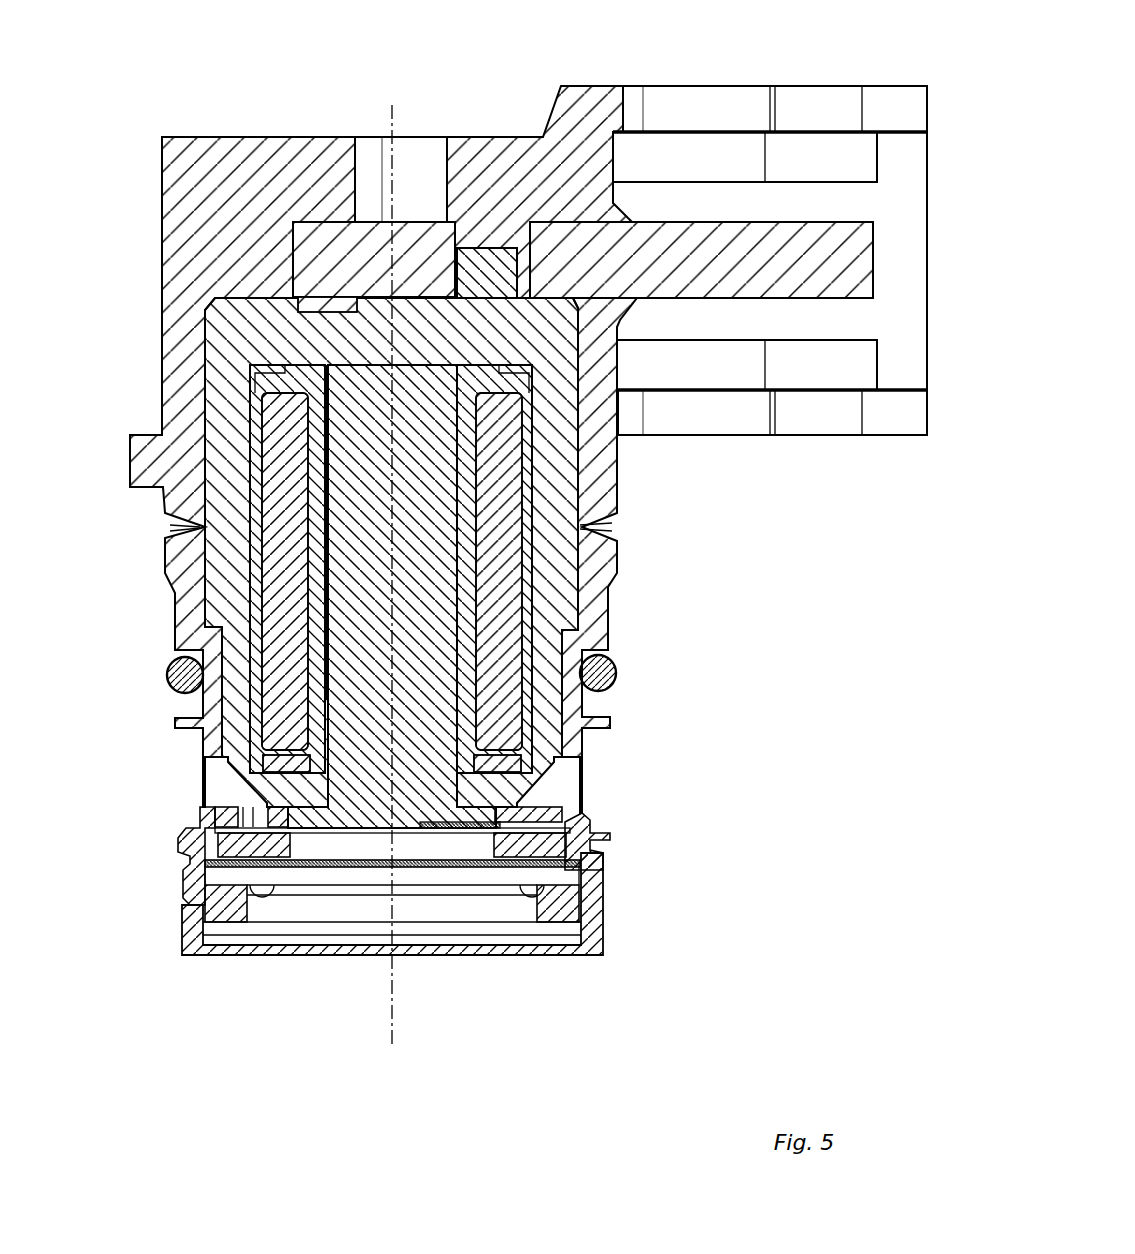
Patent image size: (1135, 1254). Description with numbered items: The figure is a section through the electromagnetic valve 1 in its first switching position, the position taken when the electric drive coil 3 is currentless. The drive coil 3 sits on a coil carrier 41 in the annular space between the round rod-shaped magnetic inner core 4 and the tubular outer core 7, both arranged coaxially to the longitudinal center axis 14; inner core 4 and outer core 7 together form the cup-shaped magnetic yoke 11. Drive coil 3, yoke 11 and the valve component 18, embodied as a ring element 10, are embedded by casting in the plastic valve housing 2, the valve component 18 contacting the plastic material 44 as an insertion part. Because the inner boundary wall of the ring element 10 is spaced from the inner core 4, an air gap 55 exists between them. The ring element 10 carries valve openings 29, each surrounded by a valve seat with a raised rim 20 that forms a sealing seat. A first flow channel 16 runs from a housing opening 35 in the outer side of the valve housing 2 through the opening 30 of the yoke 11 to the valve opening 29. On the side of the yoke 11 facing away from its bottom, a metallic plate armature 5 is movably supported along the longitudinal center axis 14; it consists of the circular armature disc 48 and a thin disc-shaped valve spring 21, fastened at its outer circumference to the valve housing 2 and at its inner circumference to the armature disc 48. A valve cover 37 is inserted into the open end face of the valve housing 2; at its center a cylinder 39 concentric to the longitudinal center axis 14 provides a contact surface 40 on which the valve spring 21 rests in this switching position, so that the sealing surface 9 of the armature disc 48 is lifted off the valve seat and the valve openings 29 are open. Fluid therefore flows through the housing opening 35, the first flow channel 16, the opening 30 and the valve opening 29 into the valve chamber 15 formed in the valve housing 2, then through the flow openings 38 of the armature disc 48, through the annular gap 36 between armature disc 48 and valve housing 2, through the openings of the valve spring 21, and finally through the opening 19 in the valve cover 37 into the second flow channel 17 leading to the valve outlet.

The electromagnetic valve 1 is at (148, 125).
The valve housing 2 is at (213, 258).
The electric drive coil 3 is at (270, 417).
The magnetic inner core 4 is at (430, 528).
The plate armature 5 is at (592, 820).
The outer core 7 is at (548, 640).
The sealing surface 9 is at (573, 843).
The ring element 10 is at (567, 813).
The magnetic yoke 11 is at (220, 466).
The longitudinal center axis 14 is at (393, 105).
The valve chamber 15 is at (213, 830).
The first flow channel 16 is at (220, 797).
The second flow channel 17 is at (298, 912).
The valve component 18 is at (217, 813).
The opening 19 is at (267, 890).
The raised rim 20 is at (563, 822).
The valve spring 21 is at (577, 880).
The valve opening 29 is at (213, 848).
The opening 30 is at (220, 770).
The housing opening 35 is at (193, 747).
The annular gap 36 is at (575, 841).
The valve cover 37 is at (252, 328).
The flow opening 38 is at (330, 847).
The cylinder 39 is at (477, 862).
The contact surface 40 is at (460, 822).
The coil carrier 41 is at (468, 490).
The plastic material 44 is at (298, 803).
The armature disc 48 is at (568, 858).
The air gap 55 is at (485, 860).